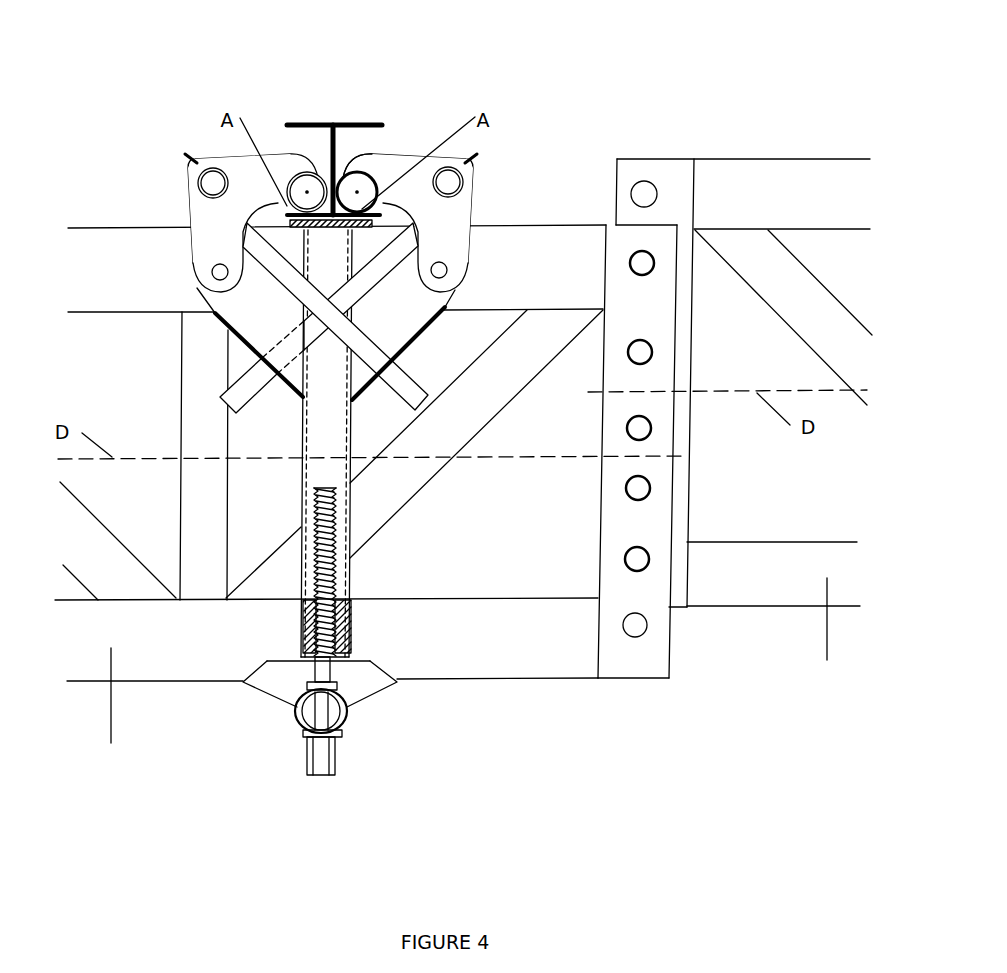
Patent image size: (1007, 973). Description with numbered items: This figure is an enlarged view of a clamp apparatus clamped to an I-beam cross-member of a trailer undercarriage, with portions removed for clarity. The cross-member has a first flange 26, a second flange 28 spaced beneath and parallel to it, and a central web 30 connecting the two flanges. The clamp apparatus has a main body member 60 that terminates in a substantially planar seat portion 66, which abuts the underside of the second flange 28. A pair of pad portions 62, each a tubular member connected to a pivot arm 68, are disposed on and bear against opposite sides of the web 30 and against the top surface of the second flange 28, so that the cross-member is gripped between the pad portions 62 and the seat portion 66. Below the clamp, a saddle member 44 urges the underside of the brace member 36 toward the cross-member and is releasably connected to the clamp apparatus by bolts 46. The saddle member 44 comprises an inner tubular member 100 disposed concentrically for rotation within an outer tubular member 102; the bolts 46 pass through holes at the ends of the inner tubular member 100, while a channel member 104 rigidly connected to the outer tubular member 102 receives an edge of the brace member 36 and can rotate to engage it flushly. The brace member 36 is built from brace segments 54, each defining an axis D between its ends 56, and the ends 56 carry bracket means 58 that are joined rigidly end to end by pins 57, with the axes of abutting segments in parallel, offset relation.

The first flange 26 is at (334, 118).
The second flange 28 is at (315, 234).
The central web 30 is at (340, 158).
The brace member 36 is at (538, 686).
The saddle member 44 is at (363, 695).
The bolts 46 is at (320, 768).
The brace segments 54 is at (470, 678).
The ends 56 is at (640, 417).
The pins 57 is at (633, 263).
The bracket means 58 is at (635, 167).
The main body member 60 is at (300, 480).
The pad portions 62 is at (305, 190).
The seat portion 66 is at (290, 228).
The pivot arm 68 is at (200, 210).
The inner tubular member 100 is at (302, 725).
The outer tubular member 102 is at (347, 718).
The channel member 104 is at (275, 673).